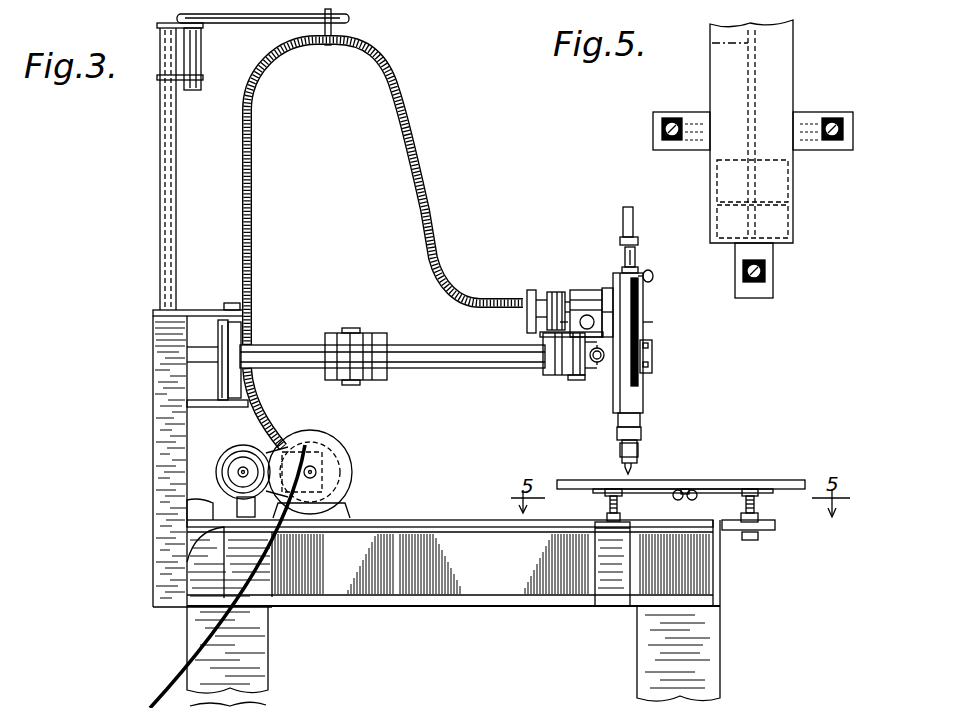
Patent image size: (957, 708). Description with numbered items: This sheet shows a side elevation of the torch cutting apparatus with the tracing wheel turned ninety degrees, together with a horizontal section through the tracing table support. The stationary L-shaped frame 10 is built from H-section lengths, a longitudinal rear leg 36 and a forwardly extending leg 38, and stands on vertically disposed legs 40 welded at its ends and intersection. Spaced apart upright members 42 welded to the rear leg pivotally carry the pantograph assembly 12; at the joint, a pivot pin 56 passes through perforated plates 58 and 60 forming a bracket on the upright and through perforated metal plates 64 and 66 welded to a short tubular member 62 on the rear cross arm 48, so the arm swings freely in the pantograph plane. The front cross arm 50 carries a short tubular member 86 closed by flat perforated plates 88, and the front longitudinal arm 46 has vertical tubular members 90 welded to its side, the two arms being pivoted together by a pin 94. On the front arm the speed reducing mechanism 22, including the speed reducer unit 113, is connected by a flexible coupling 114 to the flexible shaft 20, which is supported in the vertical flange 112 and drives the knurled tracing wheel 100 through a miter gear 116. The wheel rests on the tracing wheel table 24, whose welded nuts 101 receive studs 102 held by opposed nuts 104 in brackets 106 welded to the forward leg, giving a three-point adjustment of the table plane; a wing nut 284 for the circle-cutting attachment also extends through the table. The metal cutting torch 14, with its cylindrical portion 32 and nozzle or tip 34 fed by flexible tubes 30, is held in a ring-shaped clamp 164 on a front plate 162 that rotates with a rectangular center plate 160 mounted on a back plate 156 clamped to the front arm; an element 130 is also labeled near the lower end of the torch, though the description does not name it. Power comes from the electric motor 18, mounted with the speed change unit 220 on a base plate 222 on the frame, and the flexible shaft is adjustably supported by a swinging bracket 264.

In FIG. 3, the L-shaped frame 10 is at (498, 603).
In FIG. 3, the pantograph assembly 12 is at (448, 372).
In FIG. 3, the metal cutting torch 14 is at (643, 397).
In FIG. 3, the electric motor 18 is at (352, 472).
In FIG. 3, the flexible shaft 20 is at (418, 148).
In FIG. 3, the speed reducing mechanism 22 is at (582, 290).
In FIG. 3, the tracing wheel table 24 is at (725, 482).
In FIG. 3, the flexible tubes 30 is at (622, 220).
In FIG. 3, the cylindrical portion 32 is at (640, 380).
In FIG. 3, the nozzle or tip 34 is at (642, 442).
In FIG. 3, the longitudinal rear leg 36 is at (152, 580).
In FIG. 3, the forwardly extending leg 38 is at (420, 598).
In FIG. 5, the forwardly extending leg 38 is at (787, 60).
In FIG. 3, the vertically disposed legs 40 is at (250, 668).
In FIG. 3, the upright members 42 is at (160, 466).
In FIG. 3, the front longitudinal arm 46 is at (650, 355).
In FIG. 3, the rear cross arm 48 is at (290, 345).
In FIG. 3, the front cross arm 50 is at (448, 345).
In FIG. 3, the pivot pin 56 is at (232, 303).
In FIG. 3, the perforated plate 58 is at (208, 310).
In FIG. 3, the perforated plate 60 is at (208, 403).
In FIG. 3, the tubular member 62 is at (220, 350).
In FIG. 3, the perforated metal plate 64 is at (223, 325).
In FIG. 3, the perforated metal plate 66 is at (222, 390).
In FIG. 3, the tubular member 86 is at (545, 368).
In FIG. 3, the flat perforated plates 88 is at (553, 380).
In FIG. 3, the tubular members 90 is at (563, 380).
In FIG. 3, the pin 94 is at (566, 322).
In FIG. 3, the knurled tracing wheel 100 is at (632, 477).
In FIG. 3, the nuts 101 is at (598, 481).
In FIG. 3, the studs 102 is at (668, 498).
In FIG. 5, the studs 102 is at (670, 138).
In FIG. 3, the opposed nuts 104 is at (610, 515).
In FIG. 5, the opposed nuts 104 is at (672, 122).
In FIG. 3, the brackets 106 is at (628, 572).
In FIG. 5, the brackets 106 is at (693, 150).
In FIG. 3, the vertical flange 112 is at (530, 300).
In FIG. 3, the speed reducer unit 113 is at (588, 290).
In FIG. 3, the flexible coupling 114 is at (552, 300).
In FIG. 3, the miter gear 116 is at (207, 450).
In FIG. 3, the shaft 130 is at (640, 420).
In FIG. 3, the back plate 156 is at (596, 385).
In FIG. 3, the center plate 160 is at (604, 323).
In FIG. 3, the front plate 162 is at (646, 283).
In FIG. 3, the ring-shaped clamp 164 is at (645, 322).
In FIG. 3, the speed change unit 220 is at (280, 446).
In FIG. 3, the base plate 222 is at (215, 498).
In FIG. 3, the swinging bracket 264 is at (256, 27).
In FIG. 3, the wing nut 284 is at (705, 490).